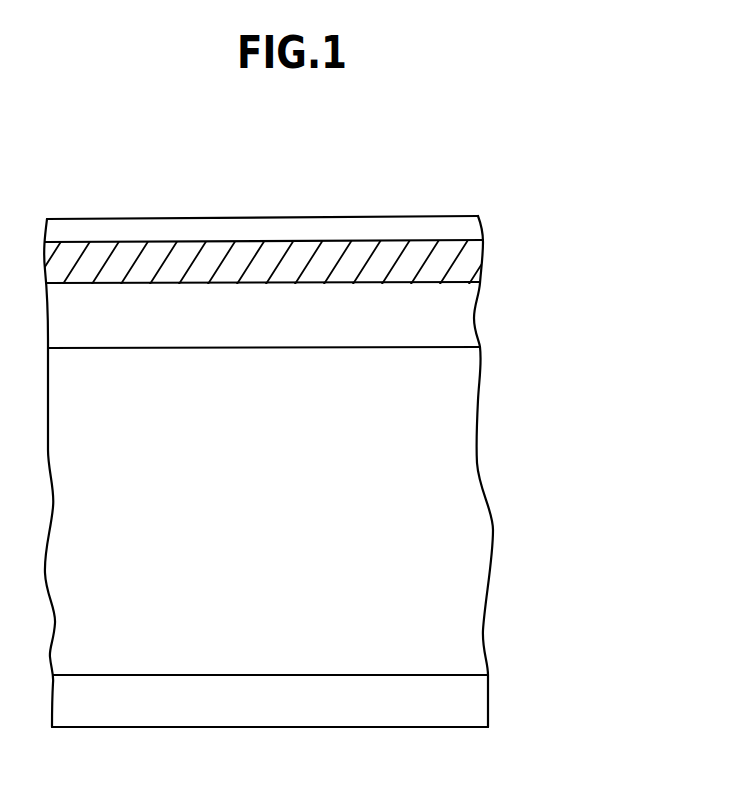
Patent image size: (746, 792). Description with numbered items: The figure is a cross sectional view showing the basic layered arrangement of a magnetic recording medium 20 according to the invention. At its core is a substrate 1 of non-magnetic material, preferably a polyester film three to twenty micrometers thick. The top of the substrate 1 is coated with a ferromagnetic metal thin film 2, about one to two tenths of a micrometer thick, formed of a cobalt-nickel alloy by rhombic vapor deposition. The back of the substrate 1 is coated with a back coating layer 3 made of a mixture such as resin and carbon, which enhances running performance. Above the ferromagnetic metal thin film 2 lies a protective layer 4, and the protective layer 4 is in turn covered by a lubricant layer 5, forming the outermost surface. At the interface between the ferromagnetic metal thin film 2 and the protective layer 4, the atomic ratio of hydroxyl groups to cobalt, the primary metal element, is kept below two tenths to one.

The magnetic recording medium 20 is at (233, 214).
The substrate 1 is at (478, 492).
The ferromagnetic metal thin film 2 is at (473, 315).
The back coating layer 3 is at (483, 693).
The protective layer 4 is at (479, 269).
The lubricant layer 5 is at (478, 216).